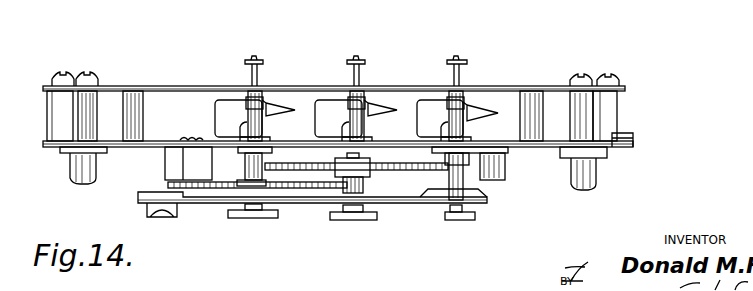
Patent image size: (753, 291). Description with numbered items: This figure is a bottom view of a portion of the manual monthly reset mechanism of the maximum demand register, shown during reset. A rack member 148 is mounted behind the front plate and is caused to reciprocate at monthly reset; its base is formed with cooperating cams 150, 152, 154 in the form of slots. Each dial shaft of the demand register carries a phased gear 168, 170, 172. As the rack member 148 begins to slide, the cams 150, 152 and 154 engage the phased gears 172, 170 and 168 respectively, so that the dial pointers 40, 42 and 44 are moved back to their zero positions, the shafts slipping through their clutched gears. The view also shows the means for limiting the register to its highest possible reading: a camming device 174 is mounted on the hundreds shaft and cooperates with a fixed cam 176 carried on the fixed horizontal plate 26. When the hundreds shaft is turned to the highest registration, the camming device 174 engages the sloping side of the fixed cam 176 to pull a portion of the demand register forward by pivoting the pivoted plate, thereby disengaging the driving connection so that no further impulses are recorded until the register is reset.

The fixed vertical front plate 26 is at (50, 147).
The register pointer 40 is at (450, 57).
The register pointer 42 is at (353, 58).
The register pointer 44 is at (250, 57).
The rack member 148 is at (107, 98).
The cam 150 is at (490, 102).
The cam 152 is at (380, 110).
The cam 154 is at (278, 108).
The phased gear 168 is at (467, 100).
The phased gear 170 is at (368, 97).
The phased gear 172 is at (258, 98).
The camming device 174 is at (218, 152).
The fixed cam 176 is at (177, 162).